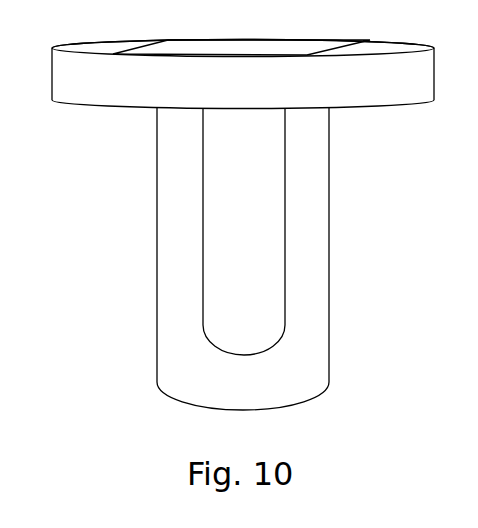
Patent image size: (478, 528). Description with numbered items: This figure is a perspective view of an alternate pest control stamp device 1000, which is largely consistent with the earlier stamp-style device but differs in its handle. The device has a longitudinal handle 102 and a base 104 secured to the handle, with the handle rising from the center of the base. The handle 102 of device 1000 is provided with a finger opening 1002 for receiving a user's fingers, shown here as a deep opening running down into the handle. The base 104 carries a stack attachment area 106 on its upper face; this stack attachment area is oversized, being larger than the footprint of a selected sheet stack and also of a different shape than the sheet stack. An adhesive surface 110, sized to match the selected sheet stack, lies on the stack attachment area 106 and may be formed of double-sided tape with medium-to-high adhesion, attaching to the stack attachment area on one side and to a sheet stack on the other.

The stamp device 1000 is at (114, 434).
The longitudinal handle 102 is at (184, 259).
The base 104 is at (229, 87).
The stack attachment area 106 is at (223, 32).
The adhesive surface 110 is at (241, 36).
The finger opening 1002 is at (156, 231).